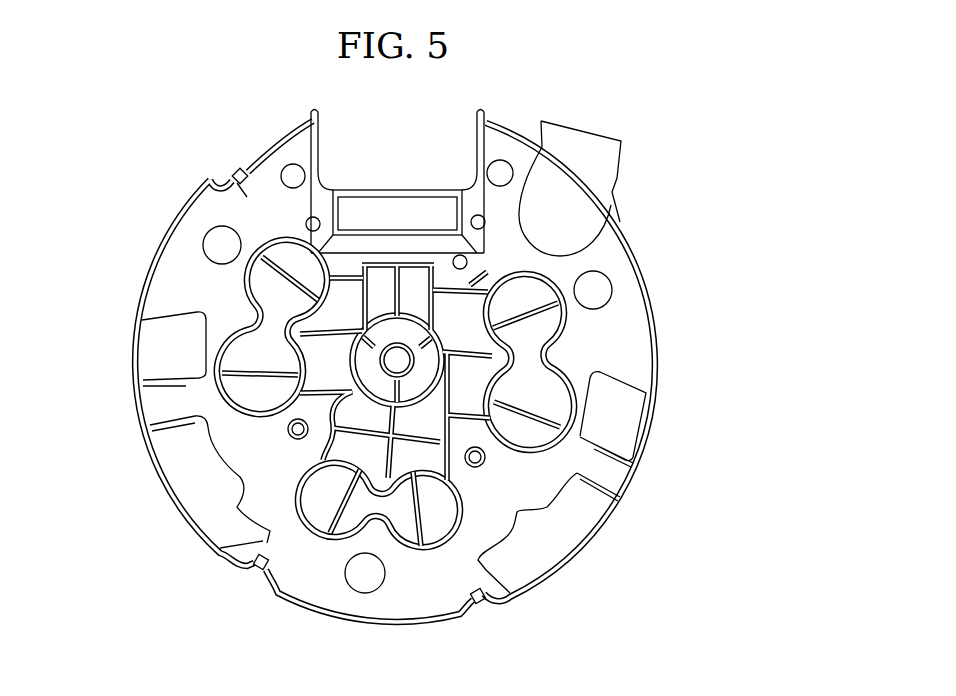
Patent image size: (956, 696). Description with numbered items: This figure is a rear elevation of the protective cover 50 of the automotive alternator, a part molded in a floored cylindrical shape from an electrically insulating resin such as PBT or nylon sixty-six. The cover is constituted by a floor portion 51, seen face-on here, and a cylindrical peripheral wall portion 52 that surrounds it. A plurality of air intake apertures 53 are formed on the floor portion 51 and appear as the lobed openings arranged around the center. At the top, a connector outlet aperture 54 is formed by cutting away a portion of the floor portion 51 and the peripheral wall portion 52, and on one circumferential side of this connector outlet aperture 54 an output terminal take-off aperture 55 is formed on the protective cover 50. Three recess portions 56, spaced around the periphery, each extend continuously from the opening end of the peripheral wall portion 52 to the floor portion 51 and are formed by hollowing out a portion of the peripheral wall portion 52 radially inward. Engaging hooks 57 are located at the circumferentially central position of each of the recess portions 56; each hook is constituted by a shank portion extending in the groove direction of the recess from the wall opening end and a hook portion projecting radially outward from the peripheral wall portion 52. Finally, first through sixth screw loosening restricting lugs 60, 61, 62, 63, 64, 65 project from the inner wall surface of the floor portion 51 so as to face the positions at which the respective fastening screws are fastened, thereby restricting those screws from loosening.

The protective cover 50 is at (130, 108).
The floor portion 51 is at (185, 288).
The peripheral wall portion 52 is at (176, 404).
The air intake apertures 53 is at (243, 353).
The connector outlet aperture 54 is at (423, 162).
The output terminal take-off aperture 55 is at (575, 205).
The recess portions 56 is at (218, 175).
The engaging hooks 57 is at (237, 165).
The first screw loosening restricting lug 60 is at (218, 247).
The second screw loosening restricting lug 61 is at (462, 262).
The third screw loosening restricting lug 62 is at (308, 222).
The fourth screw loosening restricting lug 63 is at (500, 172).
The fifth screw loosening restricting lug 64 is at (291, 172).
The sixth screw loosening restricting lug 65 is at (480, 220).